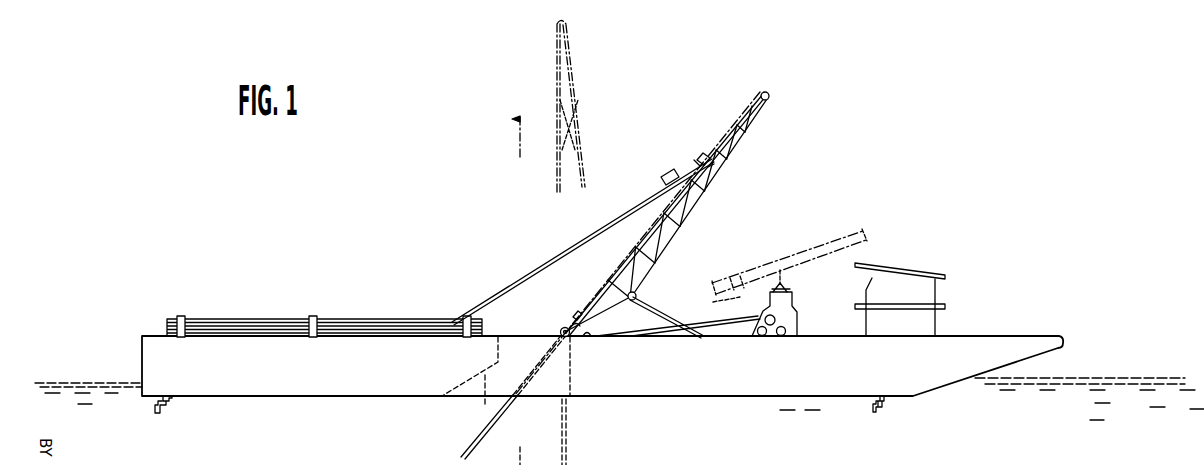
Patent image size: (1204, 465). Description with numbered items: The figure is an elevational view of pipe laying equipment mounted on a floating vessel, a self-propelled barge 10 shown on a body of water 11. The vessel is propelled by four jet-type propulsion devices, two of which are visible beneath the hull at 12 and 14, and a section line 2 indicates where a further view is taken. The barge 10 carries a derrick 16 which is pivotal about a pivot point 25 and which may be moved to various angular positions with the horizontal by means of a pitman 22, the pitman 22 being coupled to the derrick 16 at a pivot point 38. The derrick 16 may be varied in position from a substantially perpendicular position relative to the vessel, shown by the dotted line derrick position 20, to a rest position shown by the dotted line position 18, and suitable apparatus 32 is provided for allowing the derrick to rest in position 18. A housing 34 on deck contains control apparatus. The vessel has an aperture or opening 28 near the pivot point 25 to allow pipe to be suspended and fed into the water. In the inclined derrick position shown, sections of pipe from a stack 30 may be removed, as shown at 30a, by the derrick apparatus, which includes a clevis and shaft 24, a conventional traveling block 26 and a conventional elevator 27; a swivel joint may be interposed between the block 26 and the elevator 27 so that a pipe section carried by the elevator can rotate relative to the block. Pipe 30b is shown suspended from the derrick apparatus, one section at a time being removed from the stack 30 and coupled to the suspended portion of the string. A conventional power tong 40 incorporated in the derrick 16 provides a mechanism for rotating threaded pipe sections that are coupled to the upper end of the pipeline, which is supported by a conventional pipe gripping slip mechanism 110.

The section line 2— 2 is at (498, 134).
The self-propelled barge 10 is at (940, 398).
The body of water 11 is at (1072, 424).
The jet-type propulsion device 12 is at (880, 412).
The jet-type propulsion device 14 is at (165, 408).
The derrick 16 is at (778, 147).
The rest position of derrick 18 is at (815, 249).
The perpendicular derrick position 20 is at (571, 72).
The pitman 22 is at (664, 302).
The clevis and shaft 24 is at (768, 94).
The pivot point 25 is at (560, 332).
The traveling block 26 is at (704, 154).
The elevator 27 is at (665, 176).
The aperture or opening 28 is at (506, 401).
The stack 30 is at (412, 318).
The pipe section being removed 30a is at (546, 262).
The suspended pipe 30b is at (480, 446).
The derrick rest apparatus 32 is at (792, 300).
The housing 34 is at (930, 297).
The pivot point 38 is at (637, 296).
The power tong 40 is at (574, 314).
The pipe gripping slip mechanism 110 is at (562, 326).